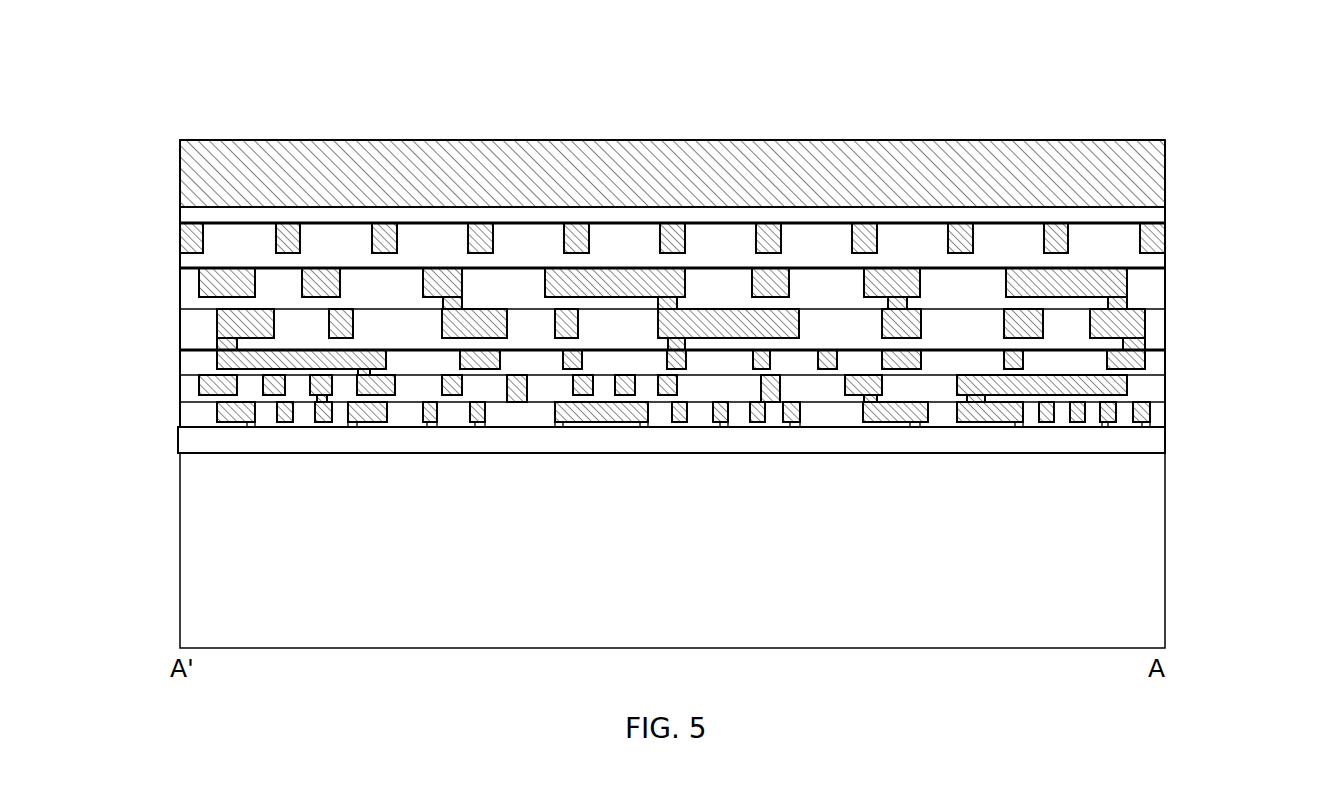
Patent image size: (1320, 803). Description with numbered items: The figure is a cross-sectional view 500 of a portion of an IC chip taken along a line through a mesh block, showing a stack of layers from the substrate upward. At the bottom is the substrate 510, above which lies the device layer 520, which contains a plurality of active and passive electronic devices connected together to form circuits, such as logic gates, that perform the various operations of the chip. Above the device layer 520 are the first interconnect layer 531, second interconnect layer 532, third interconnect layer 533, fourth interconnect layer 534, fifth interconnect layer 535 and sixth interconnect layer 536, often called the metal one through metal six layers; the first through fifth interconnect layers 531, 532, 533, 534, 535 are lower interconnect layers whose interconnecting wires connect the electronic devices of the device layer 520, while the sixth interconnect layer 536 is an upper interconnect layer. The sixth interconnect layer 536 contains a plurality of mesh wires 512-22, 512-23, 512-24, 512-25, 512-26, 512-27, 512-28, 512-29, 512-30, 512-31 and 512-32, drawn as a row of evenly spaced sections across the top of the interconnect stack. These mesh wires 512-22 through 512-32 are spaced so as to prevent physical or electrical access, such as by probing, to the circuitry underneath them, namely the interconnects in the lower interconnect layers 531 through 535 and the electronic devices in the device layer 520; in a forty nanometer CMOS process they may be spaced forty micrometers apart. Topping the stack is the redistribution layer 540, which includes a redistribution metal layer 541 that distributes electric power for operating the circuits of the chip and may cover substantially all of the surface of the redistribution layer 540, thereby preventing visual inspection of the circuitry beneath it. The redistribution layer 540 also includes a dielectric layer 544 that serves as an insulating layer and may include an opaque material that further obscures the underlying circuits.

The cross-sectional view 500 is at (158, 36).
The substrate 510 is at (1167, 527).
The device layer 520 is at (1167, 440).
The first interconnect layer 531 is at (1168, 402).
The second interconnect layer 532 is at (1168, 375).
The third interconnect layer 533 is at (1168, 350).
The fourth interconnect layer 534 is at (1168, 309).
The fifth interconnect layer 535 is at (1168, 268).
The sixth interconnect layer 536 is at (1168, 223).
The redistribution layer 540 is at (1168, 140).
The redistribution metal layer 541 is at (1153, 140).
The dielectric layer 544 is at (180, 213).
The mesh wire 512-22 is at (1165, 232).
The mesh wire 512-23 is at (1057, 223).
The mesh wire 512-24 is at (960, 223).
The mesh wire 512-25 is at (865, 223).
The mesh wire 512-26 is at (769, 223).
The mesh wire 512-27 is at (671, 223).
The mesh wire 512-28 is at (575, 223).
The mesh wire 512-29 is at (480, 223).
The mesh wire 512-30 is at (382, 223).
The mesh wire 512-31 is at (284, 223).
The mesh wire 512-32 is at (180, 238).